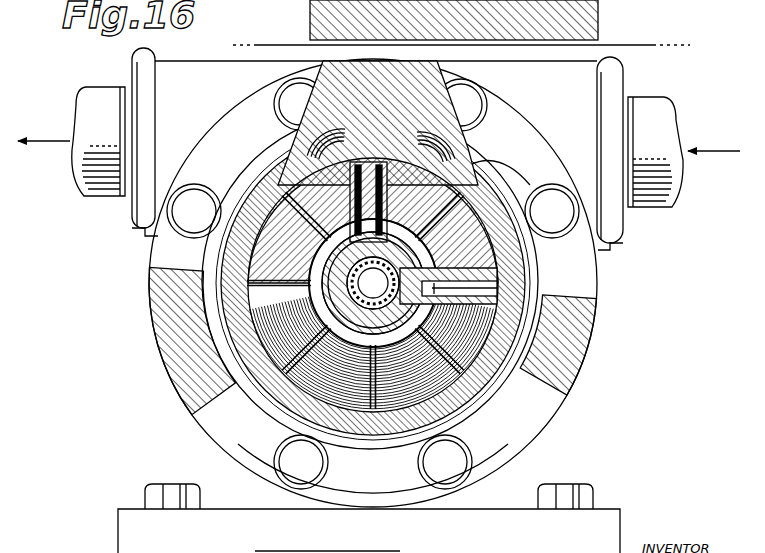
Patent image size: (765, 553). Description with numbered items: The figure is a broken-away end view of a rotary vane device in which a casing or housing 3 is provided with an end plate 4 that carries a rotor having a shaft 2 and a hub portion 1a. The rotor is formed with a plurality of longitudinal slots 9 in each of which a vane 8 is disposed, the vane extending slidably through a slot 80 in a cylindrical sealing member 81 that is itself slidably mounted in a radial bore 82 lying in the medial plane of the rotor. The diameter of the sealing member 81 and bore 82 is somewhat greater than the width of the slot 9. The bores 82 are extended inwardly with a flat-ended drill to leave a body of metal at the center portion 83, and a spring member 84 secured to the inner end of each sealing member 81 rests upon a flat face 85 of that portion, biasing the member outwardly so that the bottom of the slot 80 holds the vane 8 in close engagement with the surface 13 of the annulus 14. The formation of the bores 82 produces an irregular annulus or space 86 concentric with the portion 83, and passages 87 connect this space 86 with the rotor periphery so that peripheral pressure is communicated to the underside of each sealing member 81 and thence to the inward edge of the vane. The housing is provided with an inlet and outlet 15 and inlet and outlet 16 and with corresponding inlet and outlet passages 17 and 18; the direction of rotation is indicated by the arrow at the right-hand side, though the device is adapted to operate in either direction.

The inlet and outlet 16 is at (100, 120).
The inlet and outlet 15 is at (660, 128).
The vane 8 is at (420, 142).
The radial bore 82 is at (385, 168).
The passage 87 is at (432, 186).
The surface of the annulus 13 is at (530, 182).
The cylindrical sealing member 81 is at (352, 190).
The slot 80 is at (350, 226).
The slot 9 is at (306, 224).
The hub portion 1a is at (312, 256).
The irregular annulus or space 86 is at (316, 270).
The spring member 84 is at (360, 278).
The flat face 85 is at (360, 292).
The shaft 2 is at (362, 318).
The body of metal at the center portion 83 is at (366, 300).
The inlet and outlet passage 18 is at (208, 316).
The casing or housing 3 is at (584, 272).
The annulus 14 is at (505, 290).
The inlet and outlet passage 17 is at (530, 300).
The end plate 4 is at (605, 380).